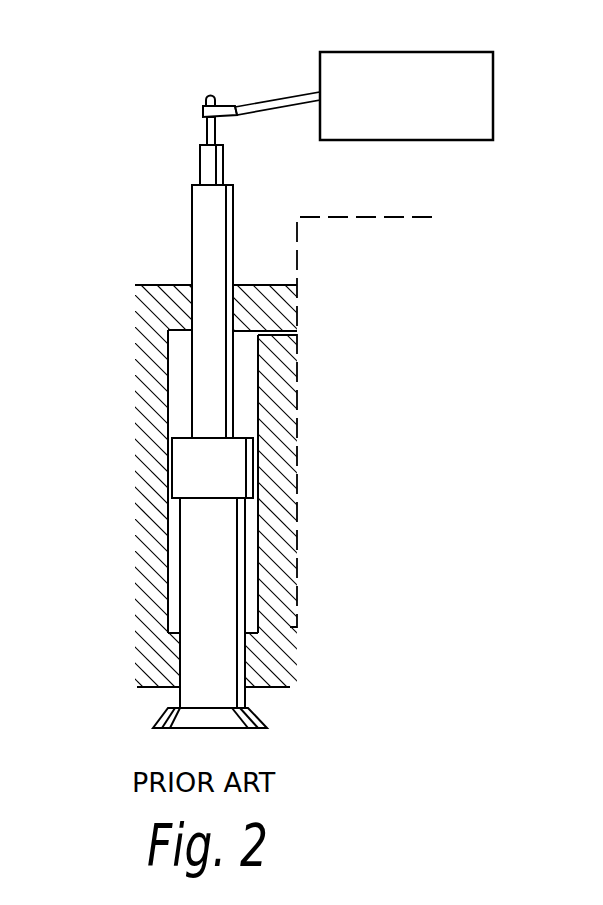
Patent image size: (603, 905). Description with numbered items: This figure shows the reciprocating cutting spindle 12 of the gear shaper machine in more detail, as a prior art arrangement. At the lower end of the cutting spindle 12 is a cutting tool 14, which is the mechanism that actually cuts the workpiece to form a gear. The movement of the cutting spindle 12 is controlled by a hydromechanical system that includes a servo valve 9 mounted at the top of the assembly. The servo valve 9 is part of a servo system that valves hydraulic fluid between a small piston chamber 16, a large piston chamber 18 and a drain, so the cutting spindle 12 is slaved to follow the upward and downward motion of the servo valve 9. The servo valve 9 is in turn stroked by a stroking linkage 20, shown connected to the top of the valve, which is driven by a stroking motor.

The servo valve 9 is at (200, 167).
The cutting spindle 12 is at (180, 695).
The cutting tool 14 is at (262, 717).
The small piston chamber 16 is at (177, 548).
The large piston chamber 18 is at (178, 353).
The stroking linkage 20 is at (495, 91).